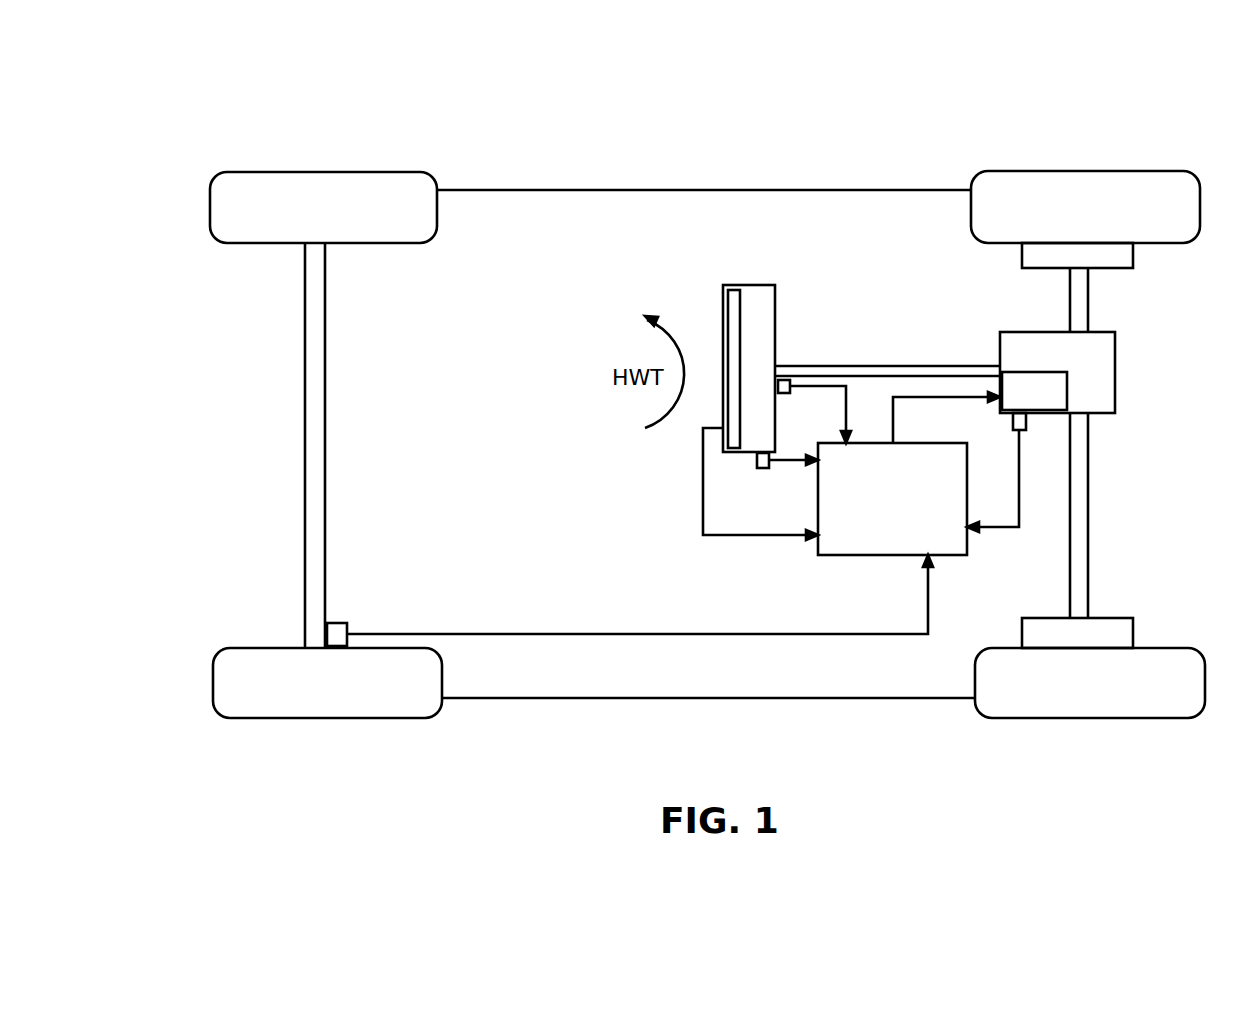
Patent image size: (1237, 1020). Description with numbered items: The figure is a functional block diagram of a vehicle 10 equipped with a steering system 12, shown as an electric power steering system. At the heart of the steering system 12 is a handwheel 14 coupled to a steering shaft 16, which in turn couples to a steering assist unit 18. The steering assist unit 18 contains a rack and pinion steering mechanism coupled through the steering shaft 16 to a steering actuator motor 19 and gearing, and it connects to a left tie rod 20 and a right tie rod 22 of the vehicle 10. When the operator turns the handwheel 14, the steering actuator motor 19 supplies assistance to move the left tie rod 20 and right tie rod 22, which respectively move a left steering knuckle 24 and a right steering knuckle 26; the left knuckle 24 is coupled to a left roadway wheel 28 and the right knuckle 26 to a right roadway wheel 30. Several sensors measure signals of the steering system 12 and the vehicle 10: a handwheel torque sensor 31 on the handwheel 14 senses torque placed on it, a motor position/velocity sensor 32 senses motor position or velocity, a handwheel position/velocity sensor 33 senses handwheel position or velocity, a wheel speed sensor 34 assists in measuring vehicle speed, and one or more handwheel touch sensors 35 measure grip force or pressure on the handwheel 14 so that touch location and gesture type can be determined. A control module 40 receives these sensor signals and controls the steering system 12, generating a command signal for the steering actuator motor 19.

The vehicle 10 is at (748, 92).
The steering system 12 is at (858, 260).
The handwheel 14 is at (748, 285).
The steering shaft 16 is at (858, 366).
The steering assist unit 18 is at (1115, 368).
The steering actuator motor 19 is at (1048, 405).
The left tie rod 20 is at (1089, 308).
The right tie rod 22 is at (1090, 490).
The left steering knuckle 24 is at (1022, 247).
The right steering knuckle 26 is at (1052, 618).
The left roadway wheel 28 is at (1123, 171).
The right roadway wheel 30 is at (1140, 648).
The handwheel torque sensor 31 is at (782, 393).
The motor position/velocity sensor 32 is at (1027, 425).
The handwheel position/velocity sensor 33 is at (769, 466).
The wheel speed sensor 34 is at (340, 623).
The handwheel touch sensor 35 is at (727, 452).
The control module 40 is at (912, 443).